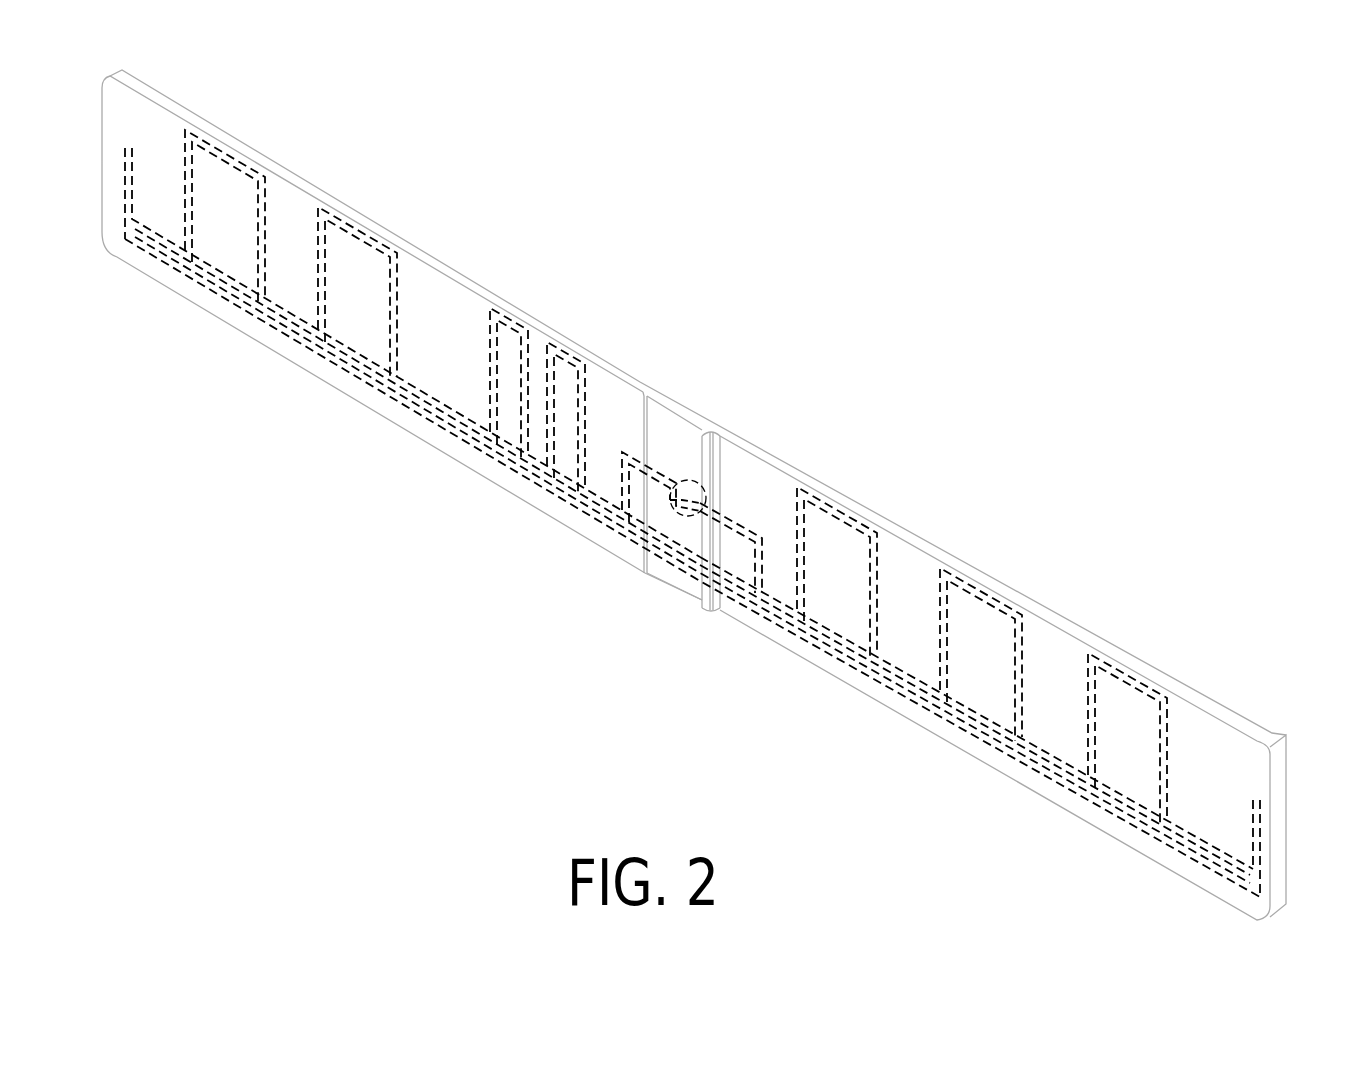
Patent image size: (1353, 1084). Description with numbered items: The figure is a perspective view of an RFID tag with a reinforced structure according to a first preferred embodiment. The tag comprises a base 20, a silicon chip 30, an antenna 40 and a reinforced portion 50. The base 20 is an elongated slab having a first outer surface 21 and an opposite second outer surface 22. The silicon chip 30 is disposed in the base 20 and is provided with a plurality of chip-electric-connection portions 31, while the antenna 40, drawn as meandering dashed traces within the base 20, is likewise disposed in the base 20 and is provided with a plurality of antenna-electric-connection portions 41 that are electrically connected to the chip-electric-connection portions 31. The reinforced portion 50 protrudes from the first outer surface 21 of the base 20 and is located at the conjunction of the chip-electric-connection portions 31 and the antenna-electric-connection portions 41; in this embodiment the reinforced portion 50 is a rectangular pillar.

The base 20 is at (905, 523).
The first outer surface 21 is at (868, 678).
The second outer surface 22 is at (950, 546).
The silicon chip 30 is at (686, 498).
The chip-electric-connection portions 31 is at (676, 485).
The antenna 40 is at (868, 600).
The antenna-electric-connection portions 41 is at (688, 520).
The reinforced portion 50 is at (673, 412).